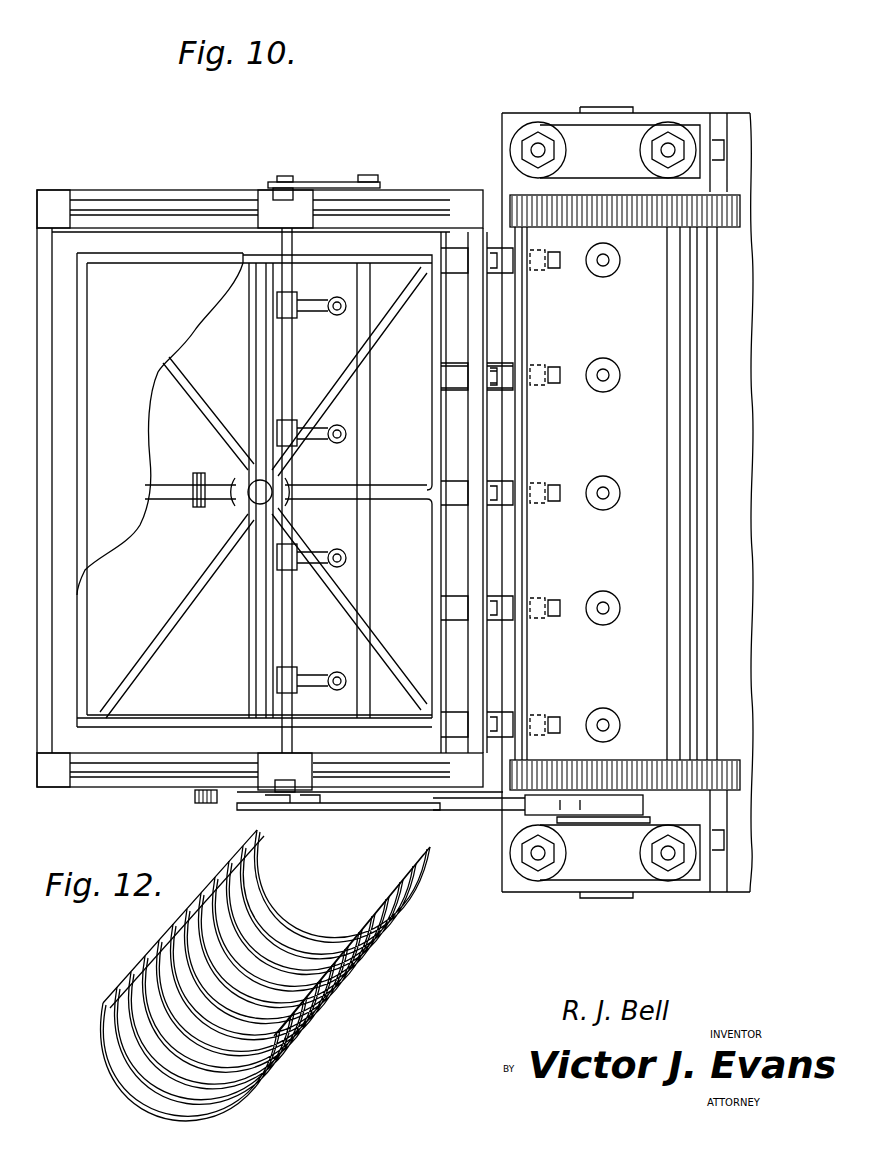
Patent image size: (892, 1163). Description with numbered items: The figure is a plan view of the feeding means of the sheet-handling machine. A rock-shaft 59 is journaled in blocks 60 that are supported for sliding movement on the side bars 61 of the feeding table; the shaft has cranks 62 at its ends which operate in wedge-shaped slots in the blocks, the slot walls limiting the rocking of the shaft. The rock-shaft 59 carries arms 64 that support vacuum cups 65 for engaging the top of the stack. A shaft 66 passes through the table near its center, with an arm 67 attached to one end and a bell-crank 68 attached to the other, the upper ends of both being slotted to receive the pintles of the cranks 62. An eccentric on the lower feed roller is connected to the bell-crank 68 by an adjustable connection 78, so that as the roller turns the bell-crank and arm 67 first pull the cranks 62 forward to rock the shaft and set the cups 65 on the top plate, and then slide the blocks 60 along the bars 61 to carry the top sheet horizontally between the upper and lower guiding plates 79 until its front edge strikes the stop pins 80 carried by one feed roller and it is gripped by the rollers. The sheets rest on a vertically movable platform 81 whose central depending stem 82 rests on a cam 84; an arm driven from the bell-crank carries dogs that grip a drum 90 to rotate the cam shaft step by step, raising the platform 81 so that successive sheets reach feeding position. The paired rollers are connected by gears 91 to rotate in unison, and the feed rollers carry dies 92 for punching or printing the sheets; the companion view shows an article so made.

The rock-shaft 59 is at (293, 383).
The blocks 60 is at (266, 205).
The side bars 61 is at (153, 205).
The cranks 62 is at (287, 190).
The arms 64 is at (314, 312).
The vacuum cups 65 is at (339, 316).
The shaft 66 is at (372, 447).
The arm 67 is at (324, 182).
The bell-crank 68 is at (313, 797).
The adjustable connection 78 is at (438, 810).
The guiding plates 79 is at (447, 378).
The pins 80 is at (553, 485).
The platform 81 is at (254, 490).
The stem 82 is at (250, 497).
The cam 84 is at (200, 472).
The drum 90 is at (226, 806).
The gears 91 is at (633, 226).
The dies 92 is at (608, 478).